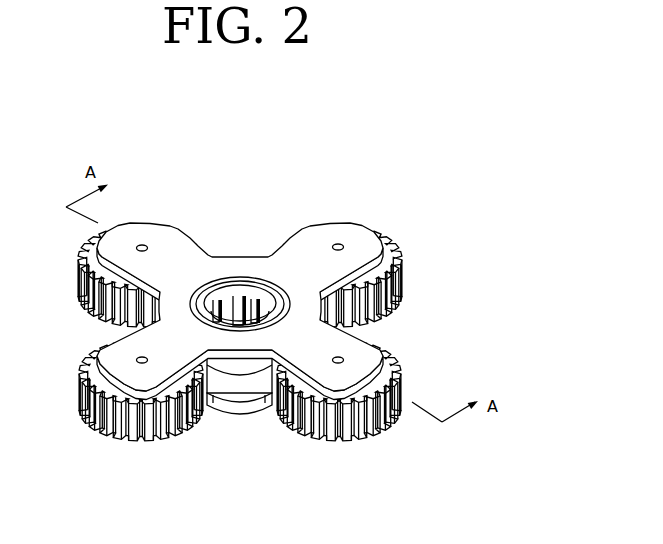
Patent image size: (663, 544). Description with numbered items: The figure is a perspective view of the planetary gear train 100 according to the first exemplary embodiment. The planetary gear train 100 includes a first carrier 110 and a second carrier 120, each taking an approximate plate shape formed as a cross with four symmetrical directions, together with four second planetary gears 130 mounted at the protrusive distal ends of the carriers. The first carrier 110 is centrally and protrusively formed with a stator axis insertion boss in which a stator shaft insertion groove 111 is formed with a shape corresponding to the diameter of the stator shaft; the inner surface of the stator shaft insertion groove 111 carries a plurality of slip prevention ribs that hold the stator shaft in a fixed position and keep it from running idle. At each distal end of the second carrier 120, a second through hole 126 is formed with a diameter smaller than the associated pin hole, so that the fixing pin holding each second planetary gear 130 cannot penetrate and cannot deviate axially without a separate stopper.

The planetary gear train 100 is at (370, 147).
The first carrier 110 is at (247, 390).
The stator shaft insertion groove 111 is at (236, 294).
The second carrier 120 is at (233, 345).
The second through hole 126 is at (141, 246).
The second planetary gear 130 is at (318, 435).